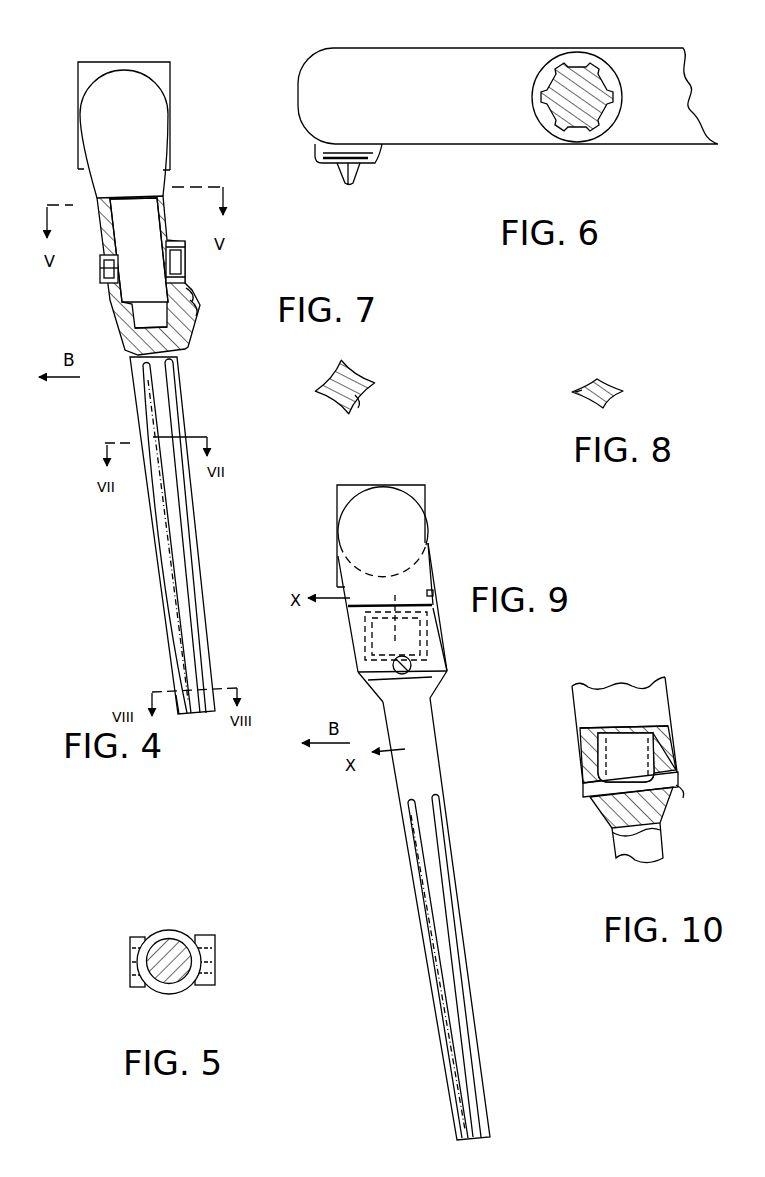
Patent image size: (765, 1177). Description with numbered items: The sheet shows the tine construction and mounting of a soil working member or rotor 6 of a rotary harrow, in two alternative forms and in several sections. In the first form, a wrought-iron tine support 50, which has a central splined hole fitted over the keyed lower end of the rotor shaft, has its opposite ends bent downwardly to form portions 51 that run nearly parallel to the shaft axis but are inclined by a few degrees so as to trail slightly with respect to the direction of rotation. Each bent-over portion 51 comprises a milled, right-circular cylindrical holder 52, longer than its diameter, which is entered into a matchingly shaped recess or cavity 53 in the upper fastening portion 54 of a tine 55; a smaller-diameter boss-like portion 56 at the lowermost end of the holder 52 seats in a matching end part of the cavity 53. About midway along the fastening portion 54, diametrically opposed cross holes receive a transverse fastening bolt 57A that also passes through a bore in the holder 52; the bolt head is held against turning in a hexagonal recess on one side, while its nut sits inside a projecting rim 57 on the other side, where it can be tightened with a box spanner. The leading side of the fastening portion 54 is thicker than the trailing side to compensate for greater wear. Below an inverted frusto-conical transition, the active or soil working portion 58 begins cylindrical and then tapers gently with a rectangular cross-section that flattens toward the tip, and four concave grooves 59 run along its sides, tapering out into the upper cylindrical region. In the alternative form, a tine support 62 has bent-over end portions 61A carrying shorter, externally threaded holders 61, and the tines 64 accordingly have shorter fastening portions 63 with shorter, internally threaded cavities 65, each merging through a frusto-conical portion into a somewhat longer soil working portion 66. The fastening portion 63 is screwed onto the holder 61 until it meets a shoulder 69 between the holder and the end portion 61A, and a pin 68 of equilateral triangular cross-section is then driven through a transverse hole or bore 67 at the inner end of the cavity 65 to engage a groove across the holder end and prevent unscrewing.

In FIG. 4, the soil working member or rotor 6 is at (174, 119).
In FIG. 6, the soil working member or rotor 6 is at (503, 22).
In FIG. 6, the tine support 50 is at (497, 128).
In FIG. 4, the bent-over portion 51 is at (98, 143).
In FIG. 4, the holder 52 is at (138, 215).
In FIG. 5, the holder 52 is at (172, 940).
In FIG. 4, the recess or cavity 53 is at (183, 300).
In FIG. 4, the fastening portion 54 is at (110, 315).
In FIG. 4, the tine 55 is at (164, 609).
In FIG. 6, the tine 55 is at (346, 184).
In FIG. 7, the tine 55 is at (370, 378).
In FIG. 8, the tine 55 is at (604, 378).
In FIG. 4, the boss-like portion 56 is at (172, 330).
In FIG. 4, the projecting rim 57 is at (184, 284).
In FIG. 5, the projecting rim 57 is at (215, 950).
In FIG. 6, the projecting rim 57 is at (322, 162).
In FIG. 4, the transverse fastening bolt 57A is at (103, 273).
In FIG. 5, the transverse fastening bolt 57A is at (137, 965).
In FIG. 4, the active or soil working portion 58 is at (155, 545).
In FIG. 8, the active or soil working portion 58 is at (580, 390).
In FIG. 4, the grooves 59 is at (173, 426).
In FIG. 7, the grooves 59 is at (356, 401).
In FIG. 9, the holder 61 is at (367, 645).
In FIG. 10, the holder 61 is at (610, 755).
In FIG. 9, the bent-over end portion 61A is at (431, 569).
In FIG. 10, the bent-over end portion 61A is at (644, 687).
In FIG. 9, the tine support 62 is at (405, 530).
In FIG. 9, the fastening portion 63 is at (440, 645).
In FIG. 10, the fastening portion 63 is at (655, 768).
In FIG. 9, the tine 64 is at (449, 822).
In FIG. 10, the tine 64 is at (616, 850).
In FIG. 9, the recess or cavity 65 is at (350, 623).
In FIG. 10, the recess or cavity 65 is at (628, 715).
In FIG. 9, the active or soil working portion 66 is at (418, 893).
In FIG. 9, the transverse hole or bore 67 is at (391, 668).
In FIG. 10, the transverse hole or bore 67 is at (680, 796).
In FIG. 9, the pin 68 is at (438, 680).
In FIG. 10, the pin 68 is at (588, 787).
In FIG. 9, the shoulder 69 is at (433, 576).
In FIG. 10, the shoulder 69 is at (660, 712).